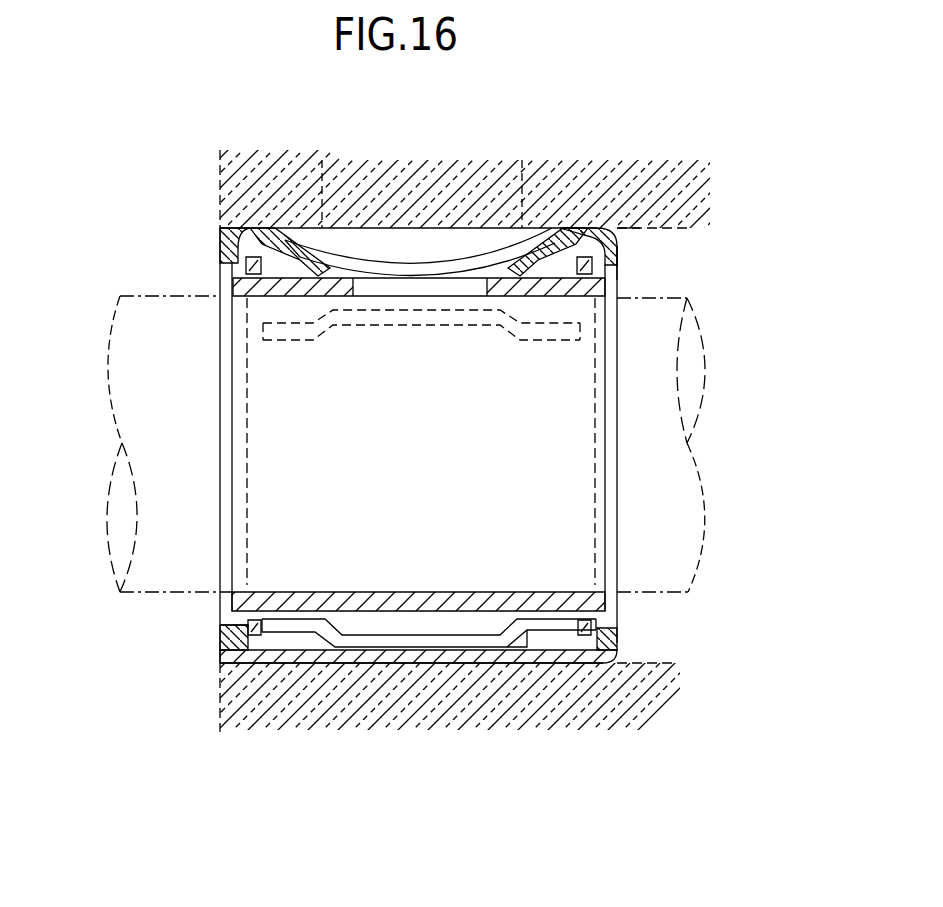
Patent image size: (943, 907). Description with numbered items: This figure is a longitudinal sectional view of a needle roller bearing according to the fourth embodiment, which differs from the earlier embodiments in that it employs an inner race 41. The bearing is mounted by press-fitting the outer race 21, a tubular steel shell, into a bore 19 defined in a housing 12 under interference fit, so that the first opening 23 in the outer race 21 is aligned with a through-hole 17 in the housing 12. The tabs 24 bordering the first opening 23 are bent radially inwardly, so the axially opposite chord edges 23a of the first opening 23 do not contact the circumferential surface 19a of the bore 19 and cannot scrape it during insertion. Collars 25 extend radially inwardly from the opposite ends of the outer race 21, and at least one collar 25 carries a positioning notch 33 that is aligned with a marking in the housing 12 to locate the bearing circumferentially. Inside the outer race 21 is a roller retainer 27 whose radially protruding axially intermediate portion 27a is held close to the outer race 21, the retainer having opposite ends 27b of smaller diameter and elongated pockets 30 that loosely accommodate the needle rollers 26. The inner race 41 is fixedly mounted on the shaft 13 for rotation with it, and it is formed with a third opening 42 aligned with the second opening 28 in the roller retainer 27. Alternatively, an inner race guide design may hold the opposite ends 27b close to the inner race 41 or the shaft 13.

The housing 12 is at (240, 163).
The shaft 13 is at (120, 295).
The through-hole 17 is at (530, 268).
The bore 19 is at (650, 258).
The circumferential surface of the bore 19a is at (643, 228).
The outer race 21 is at (282, 663).
The first opening 23 is at (362, 262).
The chord edges 23a is at (300, 257).
The tabs 24 is at (303, 243).
The collars 25 is at (250, 632).
The needle rollers 26 is at (542, 662).
The roller retainer 27 is at (235, 228).
The axially intermediate portion 27a is at (402, 650).
The opposite ends 27b is at (222, 657).
The second opening 28 is at (527, 282).
The elongated pockets 30 is at (343, 663).
The positioning notch 33 is at (218, 623).
The inner race 41 is at (620, 293).
The third opening 42 is at (467, 278).